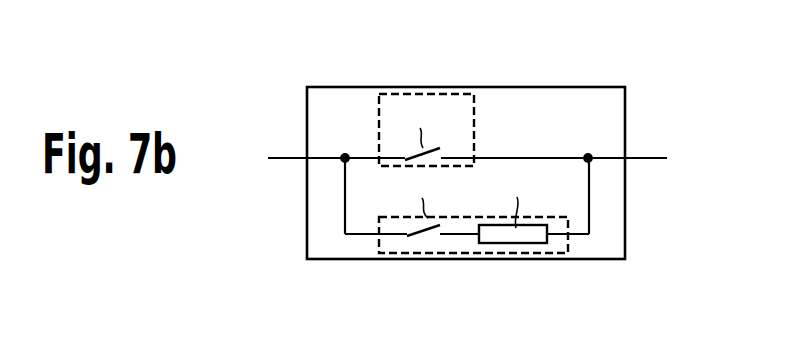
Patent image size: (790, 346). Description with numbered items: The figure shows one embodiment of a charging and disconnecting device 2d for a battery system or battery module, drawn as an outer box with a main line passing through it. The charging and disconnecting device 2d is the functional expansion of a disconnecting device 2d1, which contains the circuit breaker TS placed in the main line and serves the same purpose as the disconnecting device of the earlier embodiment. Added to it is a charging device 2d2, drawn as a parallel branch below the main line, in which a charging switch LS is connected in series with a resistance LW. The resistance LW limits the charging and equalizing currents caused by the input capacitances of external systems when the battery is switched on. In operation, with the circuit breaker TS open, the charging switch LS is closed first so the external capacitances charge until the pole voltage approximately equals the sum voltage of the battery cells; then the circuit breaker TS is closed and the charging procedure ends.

The charging and disconnecting device 2d is at (615, 107).
The disconnecting device 2d1 is at (463, 100).
The charging device 2d2 is at (464, 253).